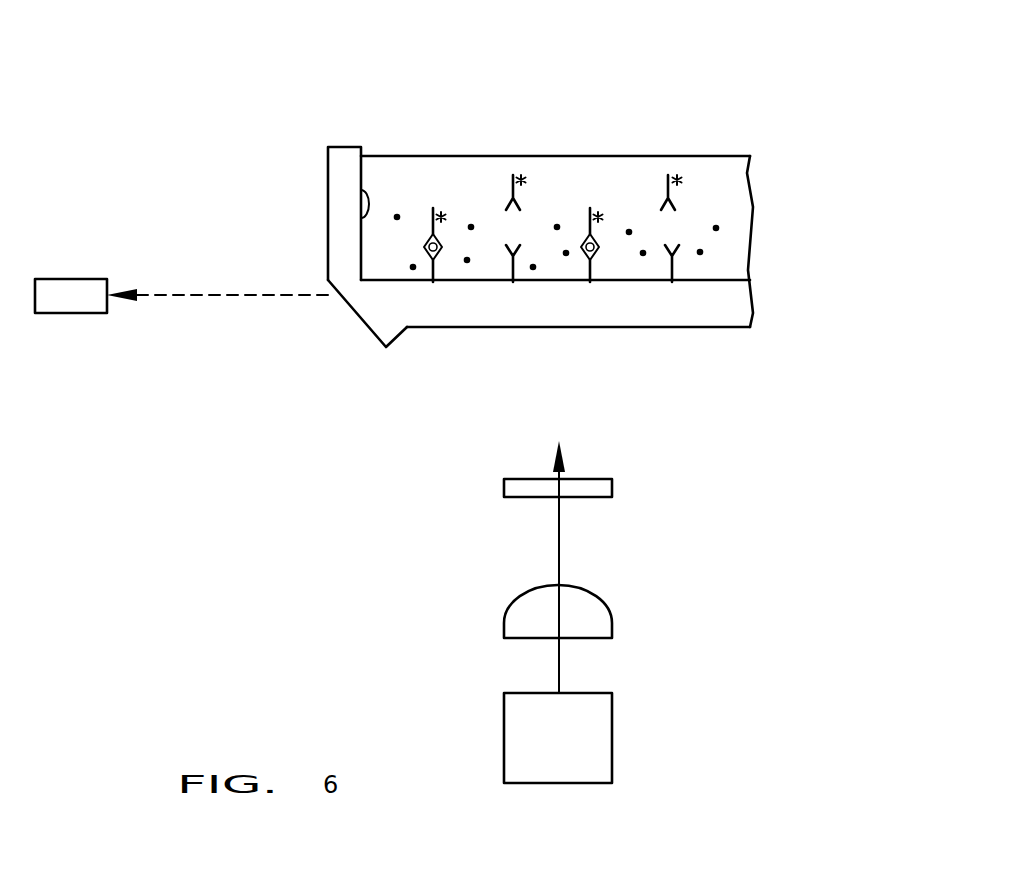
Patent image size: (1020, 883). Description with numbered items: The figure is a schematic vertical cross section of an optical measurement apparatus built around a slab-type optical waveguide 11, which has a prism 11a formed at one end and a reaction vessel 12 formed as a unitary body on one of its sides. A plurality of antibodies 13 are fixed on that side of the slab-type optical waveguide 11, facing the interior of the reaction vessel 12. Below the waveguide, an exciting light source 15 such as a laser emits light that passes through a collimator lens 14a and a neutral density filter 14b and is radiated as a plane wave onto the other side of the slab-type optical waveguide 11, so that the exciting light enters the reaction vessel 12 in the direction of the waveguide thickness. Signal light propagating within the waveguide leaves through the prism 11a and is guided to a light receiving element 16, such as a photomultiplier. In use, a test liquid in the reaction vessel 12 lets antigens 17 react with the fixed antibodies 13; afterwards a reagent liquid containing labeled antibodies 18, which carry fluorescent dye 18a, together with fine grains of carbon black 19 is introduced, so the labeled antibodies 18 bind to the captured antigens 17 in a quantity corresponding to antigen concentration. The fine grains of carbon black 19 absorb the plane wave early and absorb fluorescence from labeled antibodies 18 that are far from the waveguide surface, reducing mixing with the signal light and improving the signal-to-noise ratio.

The slab-type optical waveguide 11 is at (630, 340).
The prism 11a is at (365, 303).
The reaction vessel 12 is at (361, 188).
The antibodies 13 is at (590, 272).
The collimator lens 14a is at (593, 617).
The neutral density filter 14b is at (590, 492).
The exciting light source 15 is at (583, 747).
The light receiving element 16 is at (75, 313).
The antigens 17 is at (600, 245).
The labeled antibodies 18 is at (518, 180).
The fluorescent dye 18a is at (722, 97).
The fine grains of carbon black 19 is at (413, 270).